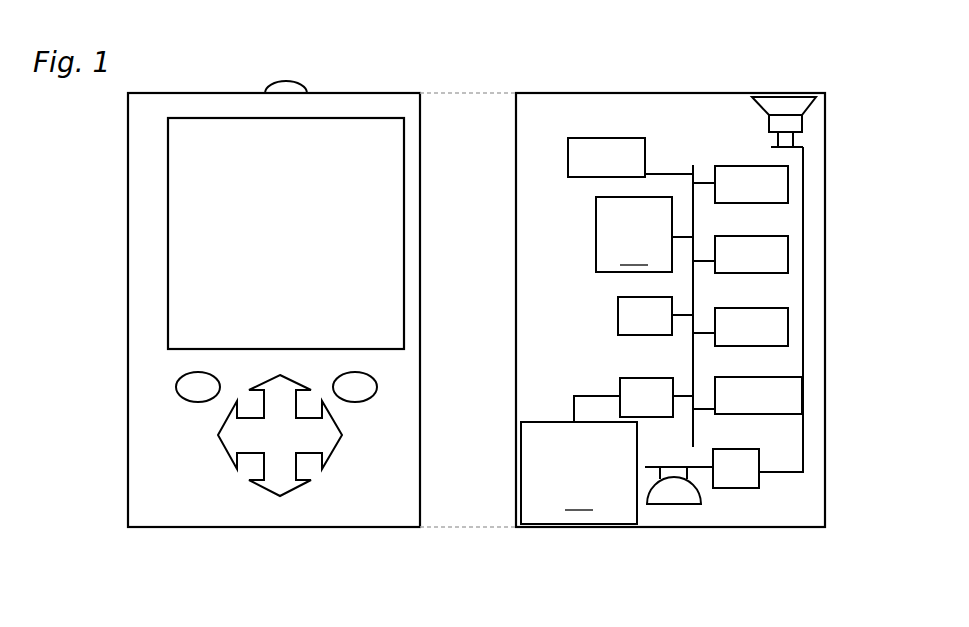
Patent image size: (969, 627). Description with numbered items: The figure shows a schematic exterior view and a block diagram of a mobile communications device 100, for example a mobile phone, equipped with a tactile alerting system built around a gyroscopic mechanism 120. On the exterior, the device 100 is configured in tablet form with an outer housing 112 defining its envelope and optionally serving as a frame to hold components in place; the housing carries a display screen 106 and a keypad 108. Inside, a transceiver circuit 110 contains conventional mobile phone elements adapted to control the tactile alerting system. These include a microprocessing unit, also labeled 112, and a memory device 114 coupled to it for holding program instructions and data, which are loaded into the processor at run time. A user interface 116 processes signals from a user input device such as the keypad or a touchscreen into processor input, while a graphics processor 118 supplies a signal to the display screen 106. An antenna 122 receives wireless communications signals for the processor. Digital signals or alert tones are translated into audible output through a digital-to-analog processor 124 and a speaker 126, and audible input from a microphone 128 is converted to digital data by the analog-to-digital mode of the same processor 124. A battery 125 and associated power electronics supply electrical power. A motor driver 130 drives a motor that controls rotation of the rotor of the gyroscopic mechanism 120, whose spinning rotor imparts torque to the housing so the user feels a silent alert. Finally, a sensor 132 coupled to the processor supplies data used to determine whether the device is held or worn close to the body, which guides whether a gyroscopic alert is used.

The mobile communications device 100 is at (481, 299).
The display screen 106 is at (376, 203).
The keypad 108 is at (342, 500).
The transceiver circuit 110 is at (681, 106).
The outer housing 112 is at (398, 527).
The memory device 114 is at (725, 236).
The user interface 116 is at (720, 308).
The graphics processor 118 is at (720, 377).
The gyroscopic mechanism 120 is at (579, 473).
The antenna 122 is at (580, 138).
The digital-to-analog processor 124 is at (735, 488).
The battery 125 is at (618, 315).
The speaker 126 is at (768, 96).
The microphone 128 is at (662, 500).
The motor driver 130 is at (650, 378).
The sensor 132 is at (762, 166).